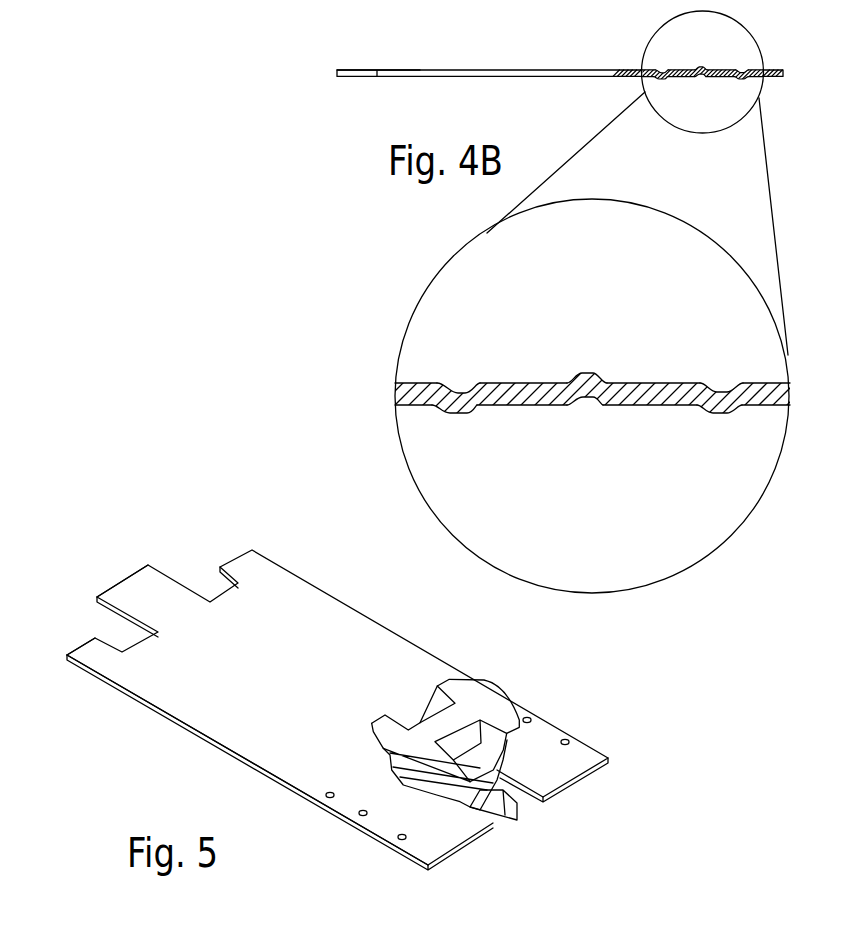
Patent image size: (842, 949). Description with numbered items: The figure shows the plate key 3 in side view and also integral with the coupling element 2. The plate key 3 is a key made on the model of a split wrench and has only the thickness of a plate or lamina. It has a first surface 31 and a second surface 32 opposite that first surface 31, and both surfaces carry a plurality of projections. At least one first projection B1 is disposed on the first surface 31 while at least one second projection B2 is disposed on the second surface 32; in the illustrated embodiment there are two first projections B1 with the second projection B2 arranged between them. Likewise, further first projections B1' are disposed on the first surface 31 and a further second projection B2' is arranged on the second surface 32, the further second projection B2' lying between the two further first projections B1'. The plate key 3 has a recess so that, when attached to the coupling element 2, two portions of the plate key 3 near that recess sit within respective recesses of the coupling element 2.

In FIG. 5, the coupling element 2 is at (522, 743).
In FIG. 5, the plate key 3 is at (305, 605).
In FIG. 4B, the first surface 31 is at (395, 78).
In FIG. 5, the first surface 31 is at (163, 720).
In FIG. 4B, the second surface 32 is at (425, 70).
In FIG. 5, the second surface 32 is at (92, 657).
In FIG. 4B, the first projection B1 is at (590, 259).
In FIG. 5, the first projection B1 is at (460, 775).
In FIG. 4B, the second projection B2 is at (654, 221).
In FIG. 5, the second projection B2 is at (545, 689).
In FIG. 5, the further first projection B1' is at (385, 863).
In FIG. 5, the further second projection B2' is at (342, 840).